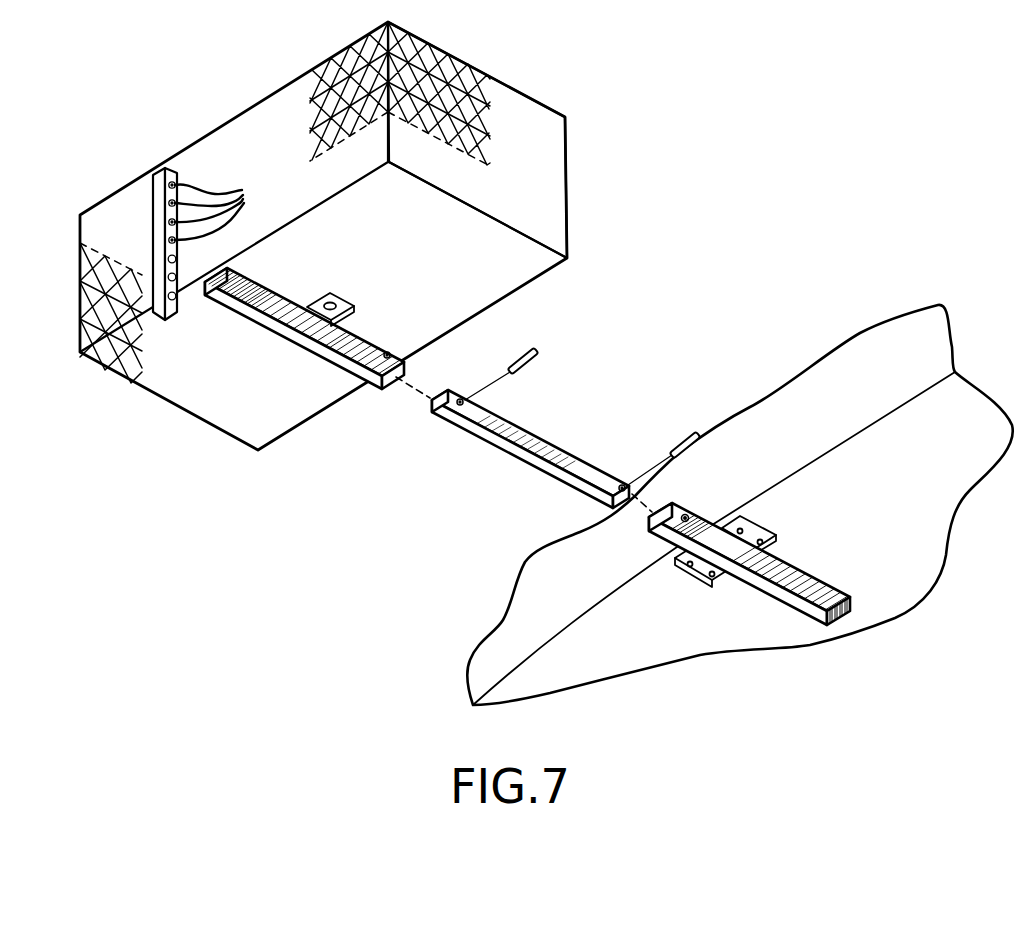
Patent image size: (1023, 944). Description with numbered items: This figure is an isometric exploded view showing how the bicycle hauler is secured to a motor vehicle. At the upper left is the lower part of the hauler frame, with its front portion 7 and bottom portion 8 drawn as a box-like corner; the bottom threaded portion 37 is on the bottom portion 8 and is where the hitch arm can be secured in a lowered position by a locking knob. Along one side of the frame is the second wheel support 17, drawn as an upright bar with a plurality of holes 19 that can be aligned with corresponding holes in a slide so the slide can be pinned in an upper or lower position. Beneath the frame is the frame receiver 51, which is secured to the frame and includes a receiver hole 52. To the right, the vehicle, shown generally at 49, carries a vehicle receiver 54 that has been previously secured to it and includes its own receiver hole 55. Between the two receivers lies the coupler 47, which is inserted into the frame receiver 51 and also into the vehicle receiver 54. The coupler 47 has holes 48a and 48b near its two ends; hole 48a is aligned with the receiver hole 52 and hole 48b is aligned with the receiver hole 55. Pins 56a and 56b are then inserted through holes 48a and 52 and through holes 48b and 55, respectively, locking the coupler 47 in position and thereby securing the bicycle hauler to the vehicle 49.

The front portion 7 is at (556, 157).
The bottom portion 8 is at (515, 270).
The second wheel support 17 is at (153, 192).
The holes 19 is at (222, 203).
The bottom threaded portion 37 is at (318, 294).
The coupler 47 is at (530, 450).
The hole 48a is at (463, 406).
The hole 48b is at (618, 492).
The vehicle 49 is at (811, 460).
The frame receiver 51 is at (307, 309).
The receiver hole 52 is at (388, 351).
The vehicle receiver 54 is at (737, 533).
The receiver hole 55 is at (683, 523).
The pin 56a is at (540, 348).
The pin 56b is at (690, 437).